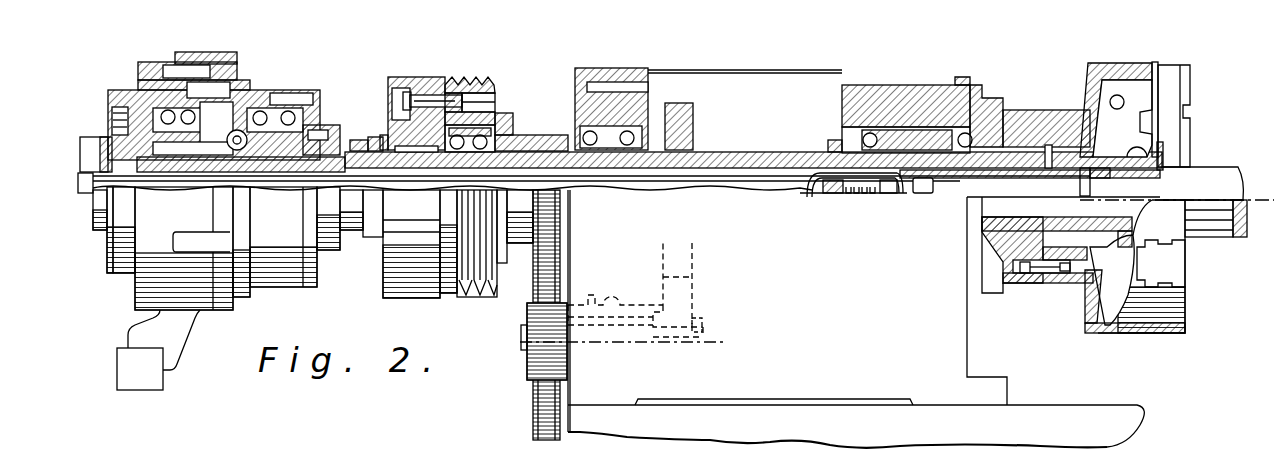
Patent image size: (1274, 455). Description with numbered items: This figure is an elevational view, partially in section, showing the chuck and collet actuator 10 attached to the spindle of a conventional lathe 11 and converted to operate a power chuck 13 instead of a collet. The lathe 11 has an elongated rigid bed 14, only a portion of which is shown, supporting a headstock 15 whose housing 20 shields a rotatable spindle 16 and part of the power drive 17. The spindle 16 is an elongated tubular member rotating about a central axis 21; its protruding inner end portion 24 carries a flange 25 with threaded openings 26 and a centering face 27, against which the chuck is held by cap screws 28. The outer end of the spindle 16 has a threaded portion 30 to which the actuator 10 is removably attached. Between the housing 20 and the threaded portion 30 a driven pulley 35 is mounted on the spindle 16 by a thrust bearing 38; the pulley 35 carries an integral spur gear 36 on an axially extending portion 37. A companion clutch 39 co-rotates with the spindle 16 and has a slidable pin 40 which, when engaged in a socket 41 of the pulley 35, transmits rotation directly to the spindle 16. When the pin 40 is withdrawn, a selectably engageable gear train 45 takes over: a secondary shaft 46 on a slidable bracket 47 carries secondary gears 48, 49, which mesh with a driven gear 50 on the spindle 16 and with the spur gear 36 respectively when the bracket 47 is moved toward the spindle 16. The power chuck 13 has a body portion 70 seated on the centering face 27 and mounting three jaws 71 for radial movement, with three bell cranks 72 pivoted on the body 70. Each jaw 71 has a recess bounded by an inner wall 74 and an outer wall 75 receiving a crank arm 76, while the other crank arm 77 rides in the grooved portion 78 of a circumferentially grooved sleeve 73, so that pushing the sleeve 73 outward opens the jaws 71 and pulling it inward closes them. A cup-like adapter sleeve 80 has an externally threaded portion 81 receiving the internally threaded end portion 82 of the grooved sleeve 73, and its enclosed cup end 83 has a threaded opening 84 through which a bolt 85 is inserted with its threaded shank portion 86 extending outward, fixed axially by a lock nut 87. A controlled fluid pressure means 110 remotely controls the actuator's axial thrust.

The chuck and collet actuator 10 is at (92, 298).
The lathe 11 is at (540, 56).
The power chuck 13 is at (1183, 317).
The bed 14 is at (1090, 410).
The headstock 15 is at (972, 362).
The spindle 16 is at (763, 152).
The power drive 17 is at (430, 298).
The housing 20 is at (968, 330).
The central axis 21 is at (1257, 199).
The inner end portion 24 is at (1017, 247).
The flange 25 is at (1010, 130).
The threaded openings 26 is at (1023, 280).
The centering face 27 is at (1040, 140).
The cap screws 28 is at (1067, 287).
The threaded portion 30 is at (350, 152).
The driven pulley 35 is at (483, 76).
The spur gear 36 is at (556, 128).
The axially extending portion 37 is at (522, 243).
The thrust bearing 38 is at (497, 120).
The clutch 39 is at (412, 76).
The slidable pin 40 is at (403, 96).
The socket 41 is at (493, 103).
The gear train 45 is at (596, 250).
The secondary shaft 46 is at (625, 343).
The slidable bracket 47 is at (590, 297).
The secondary gear 48 is at (533, 397).
The secondary gear 49 is at (692, 302).
The driven gear 50 is at (687, 117).
The body portion 70 is at (1185, 333).
The jaws 71 is at (1183, 83).
The bell cranks 72 is at (1127, 92).
The grooved sleeve 73 is at (1160, 165).
The inner wall 74 is at (1150, 122).
The outer wall 75 is at (1155, 62).
The crank arm 76 is at (1142, 98).
The crank arm 77 is at (1120, 150).
The grooved portion 78 is at (1137, 262).
The adapter sleeve 80 is at (970, 180).
The externally threaded portion 81 is at (1080, 183).
The internally threaded end portion 82 is at (1090, 172).
The cup end 83 is at (835, 146).
The threaded opening 84 is at (815, 192).
The bolt 85 is at (920, 194).
The threaded shank portion 86 is at (858, 195).
The lock nut 87 is at (887, 195).
The controlled fluid pressure means 110 is at (130, 363).